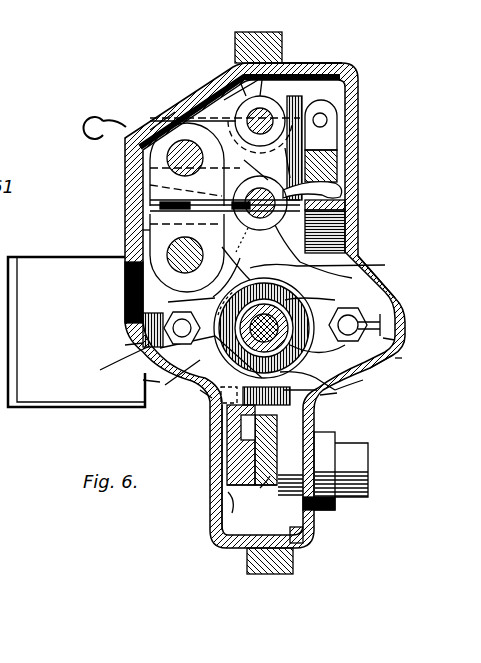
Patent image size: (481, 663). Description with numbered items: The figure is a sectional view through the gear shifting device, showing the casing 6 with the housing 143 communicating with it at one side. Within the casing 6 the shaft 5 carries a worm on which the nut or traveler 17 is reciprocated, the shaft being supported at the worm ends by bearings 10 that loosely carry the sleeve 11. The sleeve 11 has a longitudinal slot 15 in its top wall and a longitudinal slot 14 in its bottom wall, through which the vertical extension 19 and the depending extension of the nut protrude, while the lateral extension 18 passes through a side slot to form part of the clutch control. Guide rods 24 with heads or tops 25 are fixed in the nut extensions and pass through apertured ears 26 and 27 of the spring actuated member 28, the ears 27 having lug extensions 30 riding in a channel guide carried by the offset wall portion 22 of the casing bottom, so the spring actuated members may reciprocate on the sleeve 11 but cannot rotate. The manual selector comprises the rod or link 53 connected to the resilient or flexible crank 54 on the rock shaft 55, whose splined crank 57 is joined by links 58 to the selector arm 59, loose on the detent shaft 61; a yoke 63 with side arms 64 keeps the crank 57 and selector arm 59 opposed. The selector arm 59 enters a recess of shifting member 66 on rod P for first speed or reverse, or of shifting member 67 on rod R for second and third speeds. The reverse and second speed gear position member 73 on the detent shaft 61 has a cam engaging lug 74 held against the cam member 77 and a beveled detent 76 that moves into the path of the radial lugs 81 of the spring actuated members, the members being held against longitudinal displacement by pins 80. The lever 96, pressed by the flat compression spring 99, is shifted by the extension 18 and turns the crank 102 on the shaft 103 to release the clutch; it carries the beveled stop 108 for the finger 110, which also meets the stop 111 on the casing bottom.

The shaft 5 is at (300, 303).
The casing 6 is at (358, 92).
The bearings 10 is at (355, 385).
The sleeve 11 is at (238, 278).
The longitudinal slot 14 is at (363, 390).
The longitudinal slot 15 is at (168, 302).
The nut or traveler 17 is at (195, 382).
The lateral extension 18 is at (316, 422).
The vertical extension 19 is at (143, 322).
The offset wall portion 22 is at (397, 302).
The guide rods 24 is at (128, 345).
The heads or tops 25 is at (100, 370).
The apertured ears 26 is at (150, 380).
The apertured ears 27 is at (387, 368).
The spring actuated member 28 is at (209, 433).
The lug extensions 30 is at (385, 321).
The rod or link 53 is at (288, 92).
The resilient or flexible crank 54 is at (92, 118).
The rock shaft 55 is at (236, 70).
The crank 57 is at (302, 103).
The links 58 is at (303, 150).
The selector arm 59 is at (150, 208).
The detent shaft 61 is at (345, 228).
The yoke 63 is at (244, 118).
The side arms 64 is at (257, 108).
The shifting member 66 is at (185, 160).
The shifting member 67 is at (185, 256).
The reverse and second speed gear position member 73 is at (273, 187).
The cam engaging lug 74 is at (340, 183).
The beveled detent 76 is at (295, 272).
The cam member 77 is at (345, 205).
The pins 80 is at (300, 188).
The radial lugs 81 is at (330, 266).
The lever 96 is at (266, 482).
The flat compression spring 99 is at (306, 552).
The crank 102 is at (318, 524).
The shaft 103 is at (358, 462).
The stop 108 is at (210, 525).
The finger 110 is at (207, 397).
The stop 111 is at (350, 403).
The housing 143 is at (76, 332).
The shifting rod P is at (148, 115).
The shifting rod R is at (143, 287).